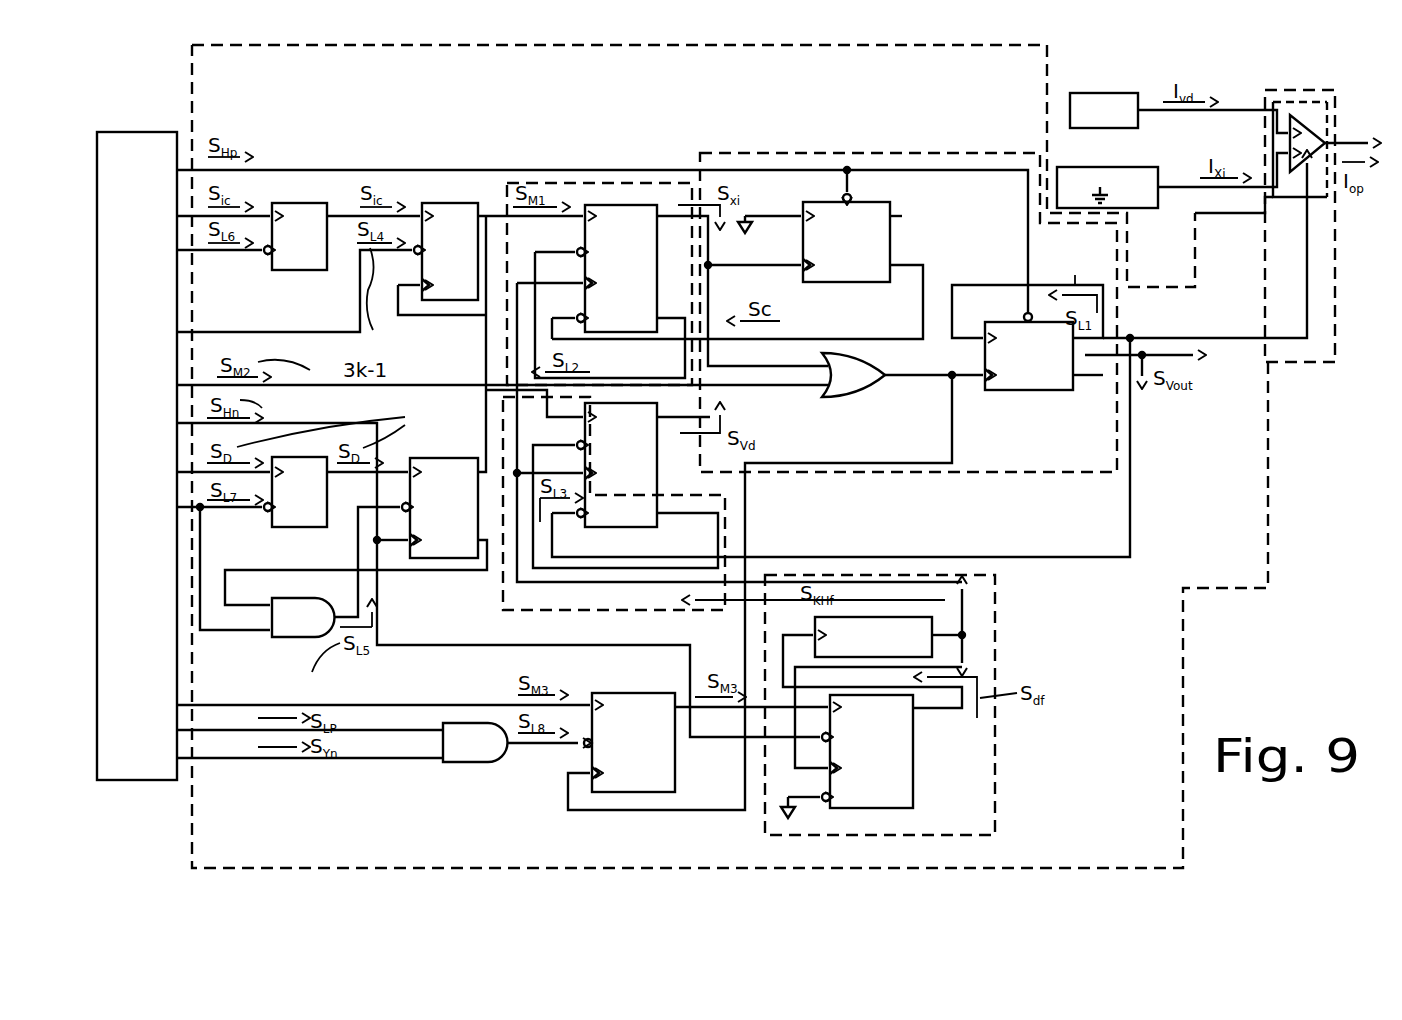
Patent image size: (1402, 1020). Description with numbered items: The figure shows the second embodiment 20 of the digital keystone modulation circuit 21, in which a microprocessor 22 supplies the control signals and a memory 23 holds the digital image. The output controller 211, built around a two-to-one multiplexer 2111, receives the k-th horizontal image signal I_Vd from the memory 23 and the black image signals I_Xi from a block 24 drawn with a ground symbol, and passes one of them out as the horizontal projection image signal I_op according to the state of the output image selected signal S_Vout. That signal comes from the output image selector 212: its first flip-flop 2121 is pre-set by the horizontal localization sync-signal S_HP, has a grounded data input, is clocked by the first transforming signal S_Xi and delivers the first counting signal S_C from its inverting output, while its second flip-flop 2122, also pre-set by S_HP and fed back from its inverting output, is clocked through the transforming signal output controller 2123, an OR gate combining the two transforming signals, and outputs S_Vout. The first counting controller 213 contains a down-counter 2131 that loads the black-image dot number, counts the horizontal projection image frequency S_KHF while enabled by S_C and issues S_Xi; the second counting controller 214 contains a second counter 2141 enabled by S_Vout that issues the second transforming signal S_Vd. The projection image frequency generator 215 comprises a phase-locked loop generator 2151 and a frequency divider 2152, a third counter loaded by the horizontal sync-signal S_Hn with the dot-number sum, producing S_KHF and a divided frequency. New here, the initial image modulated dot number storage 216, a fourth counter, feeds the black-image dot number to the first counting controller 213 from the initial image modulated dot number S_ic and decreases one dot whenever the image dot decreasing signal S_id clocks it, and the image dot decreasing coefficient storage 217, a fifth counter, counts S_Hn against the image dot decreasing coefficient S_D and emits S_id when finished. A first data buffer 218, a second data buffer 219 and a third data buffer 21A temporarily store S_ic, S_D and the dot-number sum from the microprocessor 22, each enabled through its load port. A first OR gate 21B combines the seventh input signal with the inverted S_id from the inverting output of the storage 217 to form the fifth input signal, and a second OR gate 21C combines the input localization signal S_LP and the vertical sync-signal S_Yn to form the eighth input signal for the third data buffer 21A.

The fuel injection control circuit 20 is at (176, 102).
The digital keystone modulation circuit 21 is at (190, 791).
The microprocessor 22 is at (158, 136).
The memory 23 is at (1087, 101).
The offset current source 24 is at (1066, 166).
The output controller 211 is at (1286, 100).
The 2-to-1 multiplexer 2111 is at (1293, 203).
The output image selector 212 is at (895, 126).
The first flip-flop 2121 is at (902, 218).
The second flip-flop 2122 is at (1032, 391).
The transforming signal output controller 2123 is at (868, 380).
The first counting controller 213 is at (558, 180).
The first counter 2131 is at (622, 218).
The second counting controller 214 is at (499, 560).
The second counter 2141 is at (640, 487).
The projection image frequency generator 215 is at (1000, 817).
The phase-locked loop generator 2151 is at (913, 632).
The frequency divider 2152 is at (895, 760).
The initial image modulated dot number storage 216 is at (457, 301).
The image dot decreasing coefficient storage 217 is at (440, 558).
The first data buffer 218 is at (272, 266).
The second data buffer 219 is at (273, 521).
The third data buffer 21A is at (642, 791).
The first OR gate 21B is at (270, 628).
The second OR gate 21C is at (488, 751).